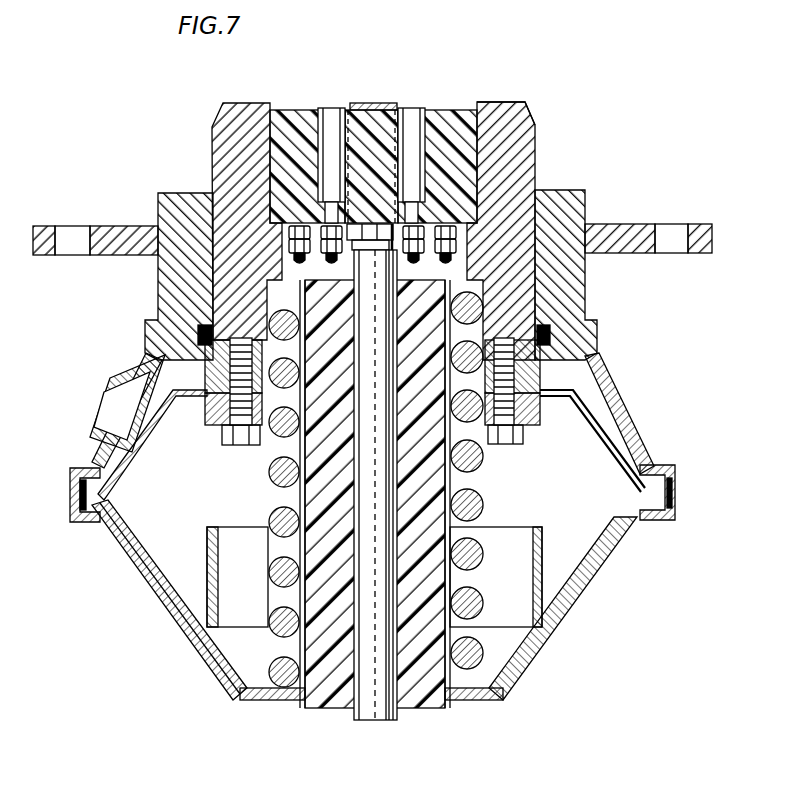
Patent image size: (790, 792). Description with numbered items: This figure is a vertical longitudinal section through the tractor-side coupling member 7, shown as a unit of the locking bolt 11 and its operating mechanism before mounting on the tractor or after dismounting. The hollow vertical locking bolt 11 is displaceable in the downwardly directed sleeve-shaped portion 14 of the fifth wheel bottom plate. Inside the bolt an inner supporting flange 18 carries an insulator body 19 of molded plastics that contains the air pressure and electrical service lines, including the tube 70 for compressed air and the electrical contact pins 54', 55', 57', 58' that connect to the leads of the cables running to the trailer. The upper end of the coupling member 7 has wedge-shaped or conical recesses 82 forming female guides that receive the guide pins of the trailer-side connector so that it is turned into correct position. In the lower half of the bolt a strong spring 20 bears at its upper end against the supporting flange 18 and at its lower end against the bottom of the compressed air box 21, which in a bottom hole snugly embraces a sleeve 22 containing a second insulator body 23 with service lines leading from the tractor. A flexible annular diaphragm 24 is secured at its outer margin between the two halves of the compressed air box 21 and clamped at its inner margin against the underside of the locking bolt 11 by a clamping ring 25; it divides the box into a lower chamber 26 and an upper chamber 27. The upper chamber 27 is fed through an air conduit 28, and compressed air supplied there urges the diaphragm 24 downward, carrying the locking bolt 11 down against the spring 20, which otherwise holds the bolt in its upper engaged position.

The coupling member 7 is at (561, 183).
The locking bolt 11 is at (512, 146).
The sleeve-shaped portion 14 is at (585, 289).
The inner supporting flange 18 is at (282, 280).
The insulator body 19 is at (483, 128).
The spring 20 is at (478, 458).
The compressed air box 21 is at (592, 568).
The sleeve 22 is at (300, 448).
The insulator body 23 is at (307, 497).
The flexible annular diaphragm 24 is at (599, 442).
The clamping ring 25 is at (535, 420).
The lower chamber 26 is at (191, 468).
The upper chamber 27 is at (196, 389).
The air conduit 28 is at (143, 386).
The contact pin 54' is at (340, 140).
The contact pin 55' is at (307, 140).
The contact pin 57' is at (450, 143).
The contact pin 58' is at (437, 143).
The tube 70 is at (362, 104).
The recess 82 is at (277, 106).